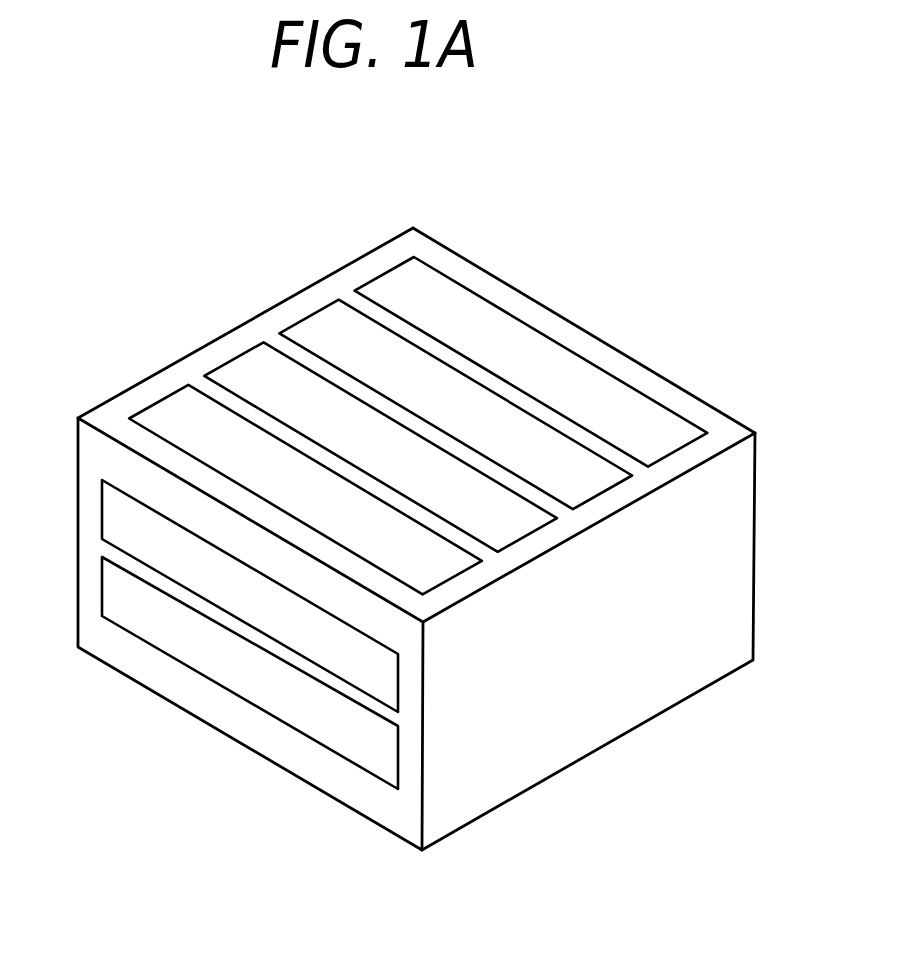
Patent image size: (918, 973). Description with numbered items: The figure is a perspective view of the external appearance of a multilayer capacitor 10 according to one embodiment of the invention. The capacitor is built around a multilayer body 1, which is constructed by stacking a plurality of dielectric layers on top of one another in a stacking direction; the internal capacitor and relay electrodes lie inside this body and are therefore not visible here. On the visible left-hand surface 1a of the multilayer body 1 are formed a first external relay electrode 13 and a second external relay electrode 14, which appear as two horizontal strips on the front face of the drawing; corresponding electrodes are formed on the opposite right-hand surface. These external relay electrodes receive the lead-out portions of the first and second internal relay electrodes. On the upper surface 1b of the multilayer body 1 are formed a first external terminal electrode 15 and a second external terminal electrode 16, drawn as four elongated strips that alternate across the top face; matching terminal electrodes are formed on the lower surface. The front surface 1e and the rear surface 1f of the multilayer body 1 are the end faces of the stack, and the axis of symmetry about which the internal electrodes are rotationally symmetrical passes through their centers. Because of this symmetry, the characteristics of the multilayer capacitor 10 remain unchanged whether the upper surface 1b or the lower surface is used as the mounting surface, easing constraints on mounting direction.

The multilayer capacitor 10 is at (162, 165).
The multilayer body 1 is at (586, 728).
The left-hand surface 1a is at (175, 685).
The upper surface 1b is at (448, 265).
The front surface 1e is at (688, 633).
The rear surface 1f is at (379, 245).
The first external relay electrode 13 is at (107, 597).
The second external relay electrode 14 is at (107, 518).
The first external terminal electrode 15 is at (307, 327).
The second external terminal electrode 16 is at (465, 490).